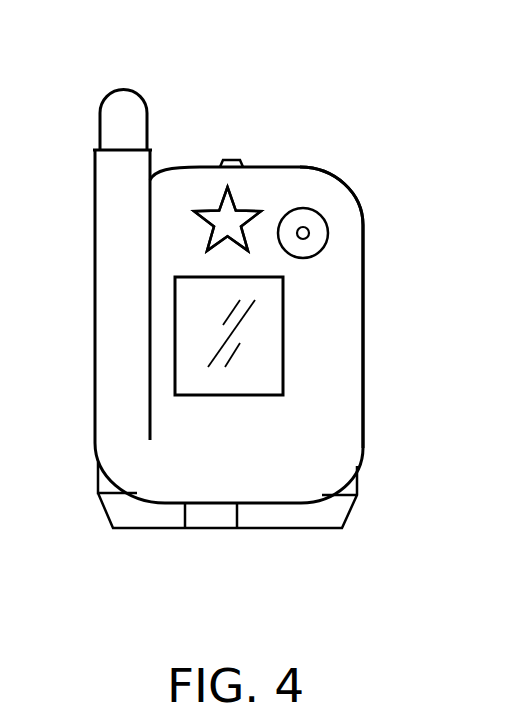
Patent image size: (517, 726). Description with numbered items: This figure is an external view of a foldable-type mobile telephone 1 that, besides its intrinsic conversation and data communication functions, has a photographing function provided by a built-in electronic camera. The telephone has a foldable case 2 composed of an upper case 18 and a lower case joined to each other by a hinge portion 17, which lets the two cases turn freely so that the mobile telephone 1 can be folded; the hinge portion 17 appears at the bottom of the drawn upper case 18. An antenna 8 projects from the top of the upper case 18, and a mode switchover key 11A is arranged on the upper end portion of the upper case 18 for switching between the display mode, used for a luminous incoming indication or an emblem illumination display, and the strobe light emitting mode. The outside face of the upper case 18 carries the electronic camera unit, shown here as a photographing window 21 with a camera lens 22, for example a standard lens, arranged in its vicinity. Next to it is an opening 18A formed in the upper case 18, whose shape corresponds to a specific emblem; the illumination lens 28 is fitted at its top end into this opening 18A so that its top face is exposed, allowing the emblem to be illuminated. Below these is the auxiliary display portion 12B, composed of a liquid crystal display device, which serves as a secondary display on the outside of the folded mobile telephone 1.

The mobile telephone 1 is at (410, 53).
The foldable case 2 is at (380, 338).
The antenna 8 is at (112, 125).
The mode switchover key 11A is at (231, 159).
The auxiliary display portion 12B is at (270, 372).
The hinge portion 17 is at (268, 537).
The upper case 18 is at (353, 225).
The opening 18A is at (233, 194).
The photographing window 21 is at (320, 217).
The camera lens 22 is at (310, 236).
The illumination lens 28 is at (226, 198).